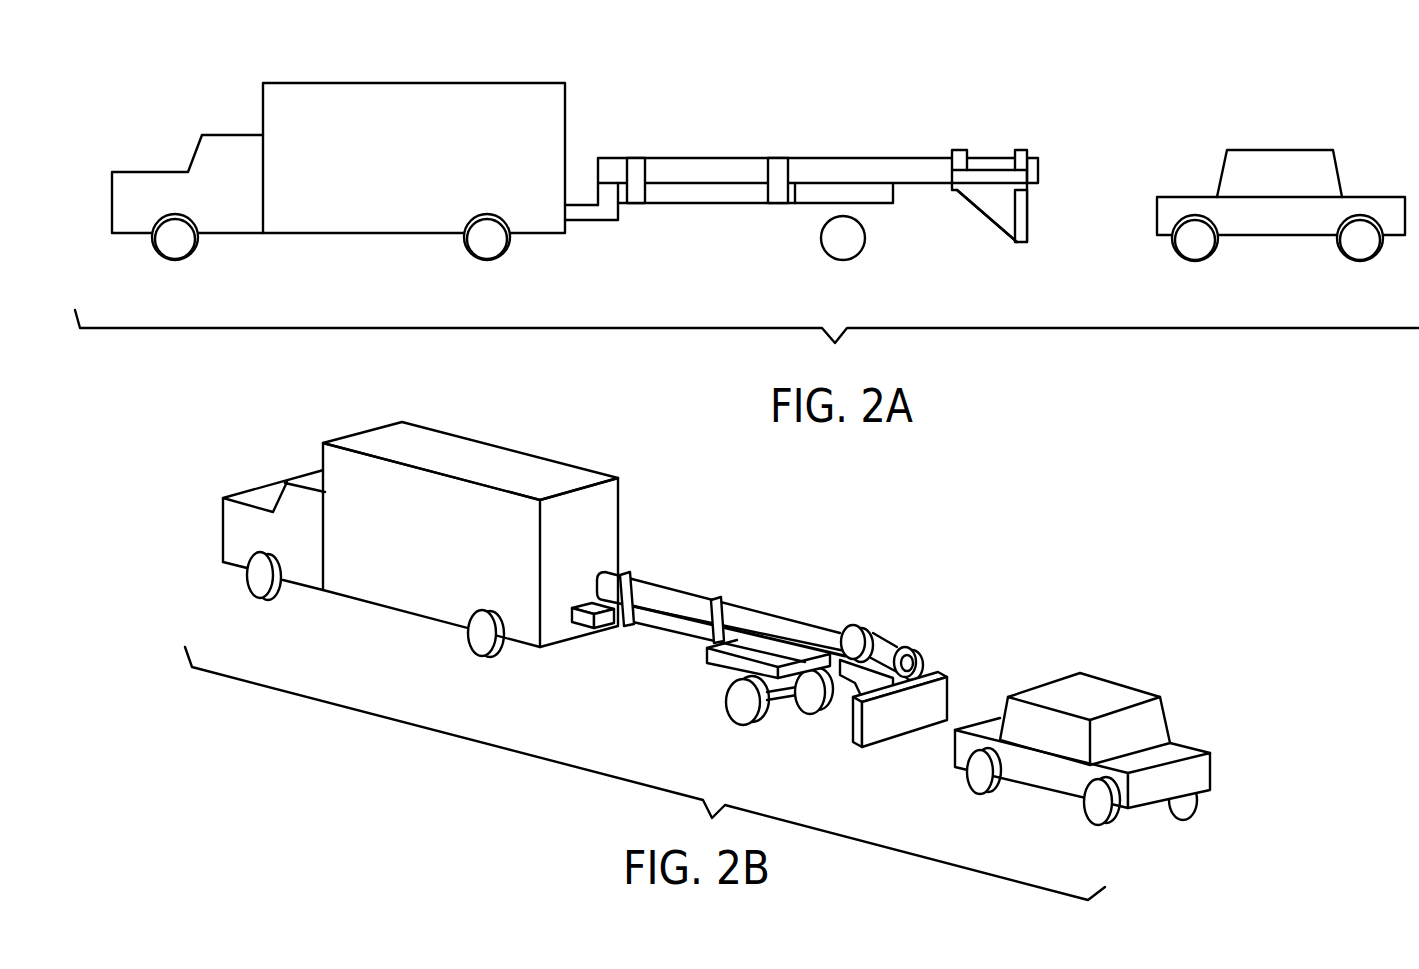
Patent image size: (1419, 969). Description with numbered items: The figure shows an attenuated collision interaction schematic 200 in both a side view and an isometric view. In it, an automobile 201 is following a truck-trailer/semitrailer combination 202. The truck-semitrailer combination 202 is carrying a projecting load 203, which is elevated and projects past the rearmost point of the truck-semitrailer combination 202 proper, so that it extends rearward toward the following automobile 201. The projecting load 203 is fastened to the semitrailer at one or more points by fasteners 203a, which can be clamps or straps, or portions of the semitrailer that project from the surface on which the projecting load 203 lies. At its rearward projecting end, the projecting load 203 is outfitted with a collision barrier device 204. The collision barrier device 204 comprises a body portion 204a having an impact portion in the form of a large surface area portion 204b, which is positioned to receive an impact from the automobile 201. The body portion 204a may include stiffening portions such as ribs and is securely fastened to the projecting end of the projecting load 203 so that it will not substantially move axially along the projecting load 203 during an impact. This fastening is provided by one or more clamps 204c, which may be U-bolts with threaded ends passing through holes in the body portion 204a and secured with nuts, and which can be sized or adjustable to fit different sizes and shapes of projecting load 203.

In FIG. 2A, the attenuated collision interaction schematic 200 is at (360, 62).
In FIG. 2B, the attenuated collision interaction schematic 200 is at (908, 497).
In FIG. 2A, the automobile 201 is at (1283, 148).
In FIG. 2B, the automobile 201 is at (1120, 682).
In FIG. 2A, the truck-trailer/semitrailer combination 202 is at (603, 112).
In FIG. 2B, the truck-trailer/semitrailer combination 202 is at (625, 530).
In FIG. 2A, the projecting load 203 is at (812, 192).
In FIG. 2B, the projecting load 203 is at (743, 634).
In FIG. 2A, the fasteners 203a is at (635, 197).
In FIG. 2B, the fasteners 203a is at (632, 577).
In FIG. 2A, the collision barrier device 204 is at (1015, 201).
In FIG. 2B, the collision barrier device 204 is at (872, 691).
In FIG. 2A, the body portion 204a is at (985, 216).
In FIG. 2B, the body portion 204a is at (852, 683).
In FIG. 2A, the large surface area portion 204b is at (1028, 210).
In FIG. 2B, the large surface area portion 204b is at (930, 703).
In FIG. 2A, the clamps 204c is at (957, 150).
In FIG. 2B, the clamps 204c is at (862, 630).